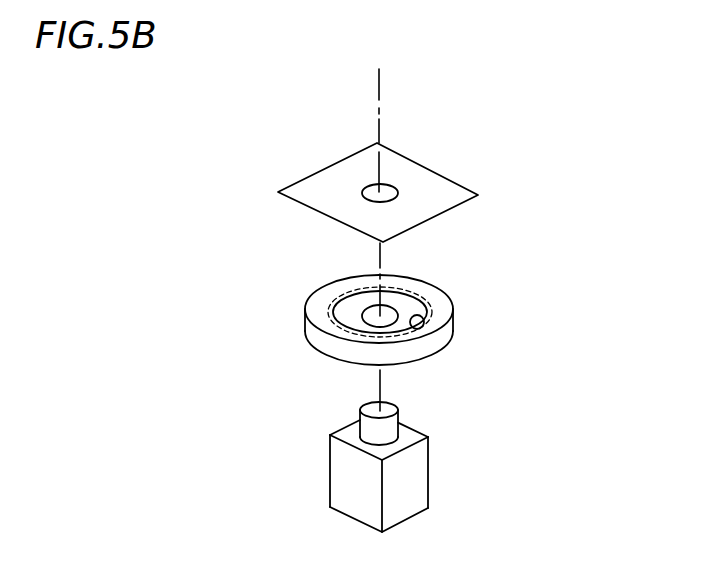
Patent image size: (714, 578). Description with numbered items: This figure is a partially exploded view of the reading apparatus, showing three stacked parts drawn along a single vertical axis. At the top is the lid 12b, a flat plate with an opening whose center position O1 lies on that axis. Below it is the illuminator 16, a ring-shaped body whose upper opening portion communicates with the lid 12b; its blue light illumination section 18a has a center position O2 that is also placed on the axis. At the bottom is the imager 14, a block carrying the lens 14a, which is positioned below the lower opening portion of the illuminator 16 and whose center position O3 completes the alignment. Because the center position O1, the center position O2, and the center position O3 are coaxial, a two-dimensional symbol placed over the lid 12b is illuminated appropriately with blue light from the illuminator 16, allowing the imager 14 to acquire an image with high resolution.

The lid 12b is at (450, 177).
The imager 14 is at (430, 472).
The lens 14a is at (390, 422).
The illuminator 16 is at (443, 312).
The blue light illumination section 18a is at (424, 324).
The center position of the opening of the lid O1 is at (381, 193).
The center position of the blue light illumination section O2 is at (381, 317).
The center position of the lens O3 is at (383, 405).